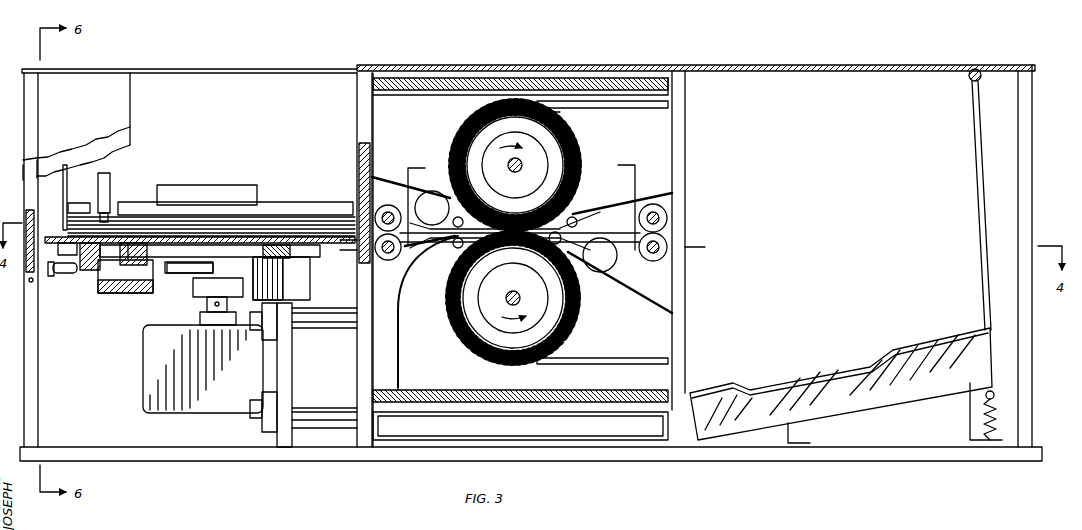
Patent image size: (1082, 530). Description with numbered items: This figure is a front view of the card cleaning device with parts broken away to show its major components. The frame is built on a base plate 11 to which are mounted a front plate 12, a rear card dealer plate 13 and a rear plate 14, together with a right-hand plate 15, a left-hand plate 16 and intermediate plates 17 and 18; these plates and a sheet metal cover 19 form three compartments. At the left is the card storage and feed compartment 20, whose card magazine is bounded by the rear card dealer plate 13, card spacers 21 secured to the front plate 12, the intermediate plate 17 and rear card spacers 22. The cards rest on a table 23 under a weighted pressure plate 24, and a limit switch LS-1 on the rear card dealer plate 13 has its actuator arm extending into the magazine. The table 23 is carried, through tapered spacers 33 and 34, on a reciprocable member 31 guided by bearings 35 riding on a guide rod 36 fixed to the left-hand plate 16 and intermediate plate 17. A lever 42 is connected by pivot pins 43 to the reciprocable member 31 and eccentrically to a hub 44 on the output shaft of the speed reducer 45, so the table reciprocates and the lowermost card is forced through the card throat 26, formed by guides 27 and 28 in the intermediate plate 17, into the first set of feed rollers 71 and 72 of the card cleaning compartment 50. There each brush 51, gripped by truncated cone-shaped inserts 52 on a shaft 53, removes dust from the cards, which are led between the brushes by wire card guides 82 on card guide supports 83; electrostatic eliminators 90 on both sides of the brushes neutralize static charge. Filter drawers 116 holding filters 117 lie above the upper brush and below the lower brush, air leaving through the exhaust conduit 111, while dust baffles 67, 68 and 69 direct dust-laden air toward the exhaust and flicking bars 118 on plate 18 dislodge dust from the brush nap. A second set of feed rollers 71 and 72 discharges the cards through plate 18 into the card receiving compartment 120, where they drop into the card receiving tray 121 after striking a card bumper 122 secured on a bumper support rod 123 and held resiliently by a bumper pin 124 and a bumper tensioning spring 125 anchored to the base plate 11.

The base plate 11 is at (750, 462).
The front plate 12 is at (98, 76).
The rear card dealer plate 13 is at (316, 76).
The rear plate 14 is at (884, 82).
The right-hand plate 15 is at (1018, 160).
The left-hand plate 16 is at (38, 378).
The intermediate plate 17 is at (372, 342).
The intermediate plate 18 is at (685, 285).
The sheet metal cover 19 is at (944, 66).
The card storage and feed compartment 20 is at (228, 83).
The card spacers 21 is at (132, 140).
The rear card spacers 22 is at (67, 192).
The table 23 is at (352, 246).
The weighted pressure plate 24 is at (300, 202).
The card throat 26 is at (392, 200).
The guide 27 is at (357, 182).
The guide 28 is at (388, 262).
The reciprocable member 31 is at (128, 237).
The tapered spacer 33 is at (117, 256).
The tapered spacer 34 is at (263, 250).
The bearings 35 is at (116, 296).
The guide rod 36 is at (84, 292).
The lever 42 is at (200, 247).
The pivot pin 43 is at (50, 272).
The hub 44 is at (192, 290).
The speed reducer 45 is at (206, 412).
The card cleaning compartment 50 is at (442, 98).
The brush 51 is at (462, 325).
The truncated cone-shaped insert 52 is at (566, 322).
The shaft 53 is at (518, 294).
The dust baffle 67 is at (380, 178).
The dust baffle 68 is at (610, 198).
The dust baffle 69 is at (400, 314).
The drive roller 71 is at (400, 252).
The driven roller 72 is at (653, 204).
The wire card guide 82 is at (590, 220).
The card guide support 83 is at (582, 214).
The electrostatic eliminator 90 is at (438, 190).
The exhaust conduit 111 is at (632, 440).
The filter drawer 116 is at (392, 90).
The filter 117 is at (512, 78).
The flicking bar 118 is at (604, 108).
The card receiving compartment 120 is at (800, 90).
The card receiving tray 121 is at (880, 360).
The card bumper 122 is at (972, 120).
The bumper support rod 123 is at (968, 78).
The bumper pin 124 is at (978, 402).
The bumper tensioning spring 125 is at (980, 420).
The limit switch LS-1 is at (112, 180).